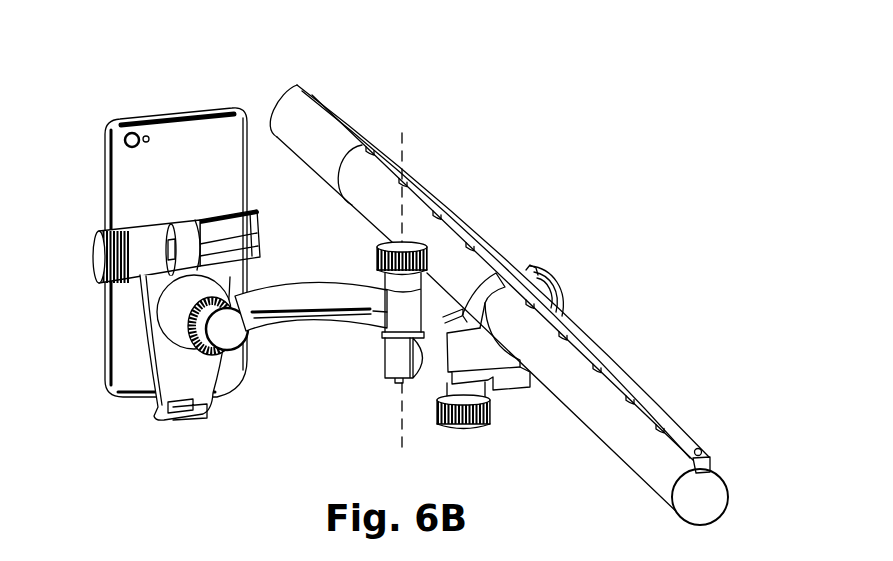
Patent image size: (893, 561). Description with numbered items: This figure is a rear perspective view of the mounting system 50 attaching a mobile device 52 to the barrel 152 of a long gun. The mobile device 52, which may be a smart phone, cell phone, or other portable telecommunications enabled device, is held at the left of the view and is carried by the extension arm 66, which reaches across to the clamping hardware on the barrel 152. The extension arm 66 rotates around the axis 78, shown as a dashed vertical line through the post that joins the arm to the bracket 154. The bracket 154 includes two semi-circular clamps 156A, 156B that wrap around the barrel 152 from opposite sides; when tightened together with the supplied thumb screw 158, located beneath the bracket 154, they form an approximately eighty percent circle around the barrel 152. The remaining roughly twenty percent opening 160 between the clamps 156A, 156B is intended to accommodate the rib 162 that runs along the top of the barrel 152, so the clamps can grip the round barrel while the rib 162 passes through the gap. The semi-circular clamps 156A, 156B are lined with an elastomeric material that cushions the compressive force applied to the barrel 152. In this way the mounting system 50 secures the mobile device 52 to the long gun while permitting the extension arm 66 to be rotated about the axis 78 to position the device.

The mounting system 50 is at (285, 333).
The mobile device 52 is at (183, 138).
The extension arm 66 is at (304, 288).
The axis 78 is at (401, 133).
The barrel 152 is at (330, 138).
The bracket 154 is at (527, 381).
The semi-circular clamp 156A is at (477, 280).
The semi-circular clamp 156B is at (553, 278).
The thumb screw 158 is at (474, 424).
The opening 160 is at (520, 257).
The rib 162 is at (621, 378).